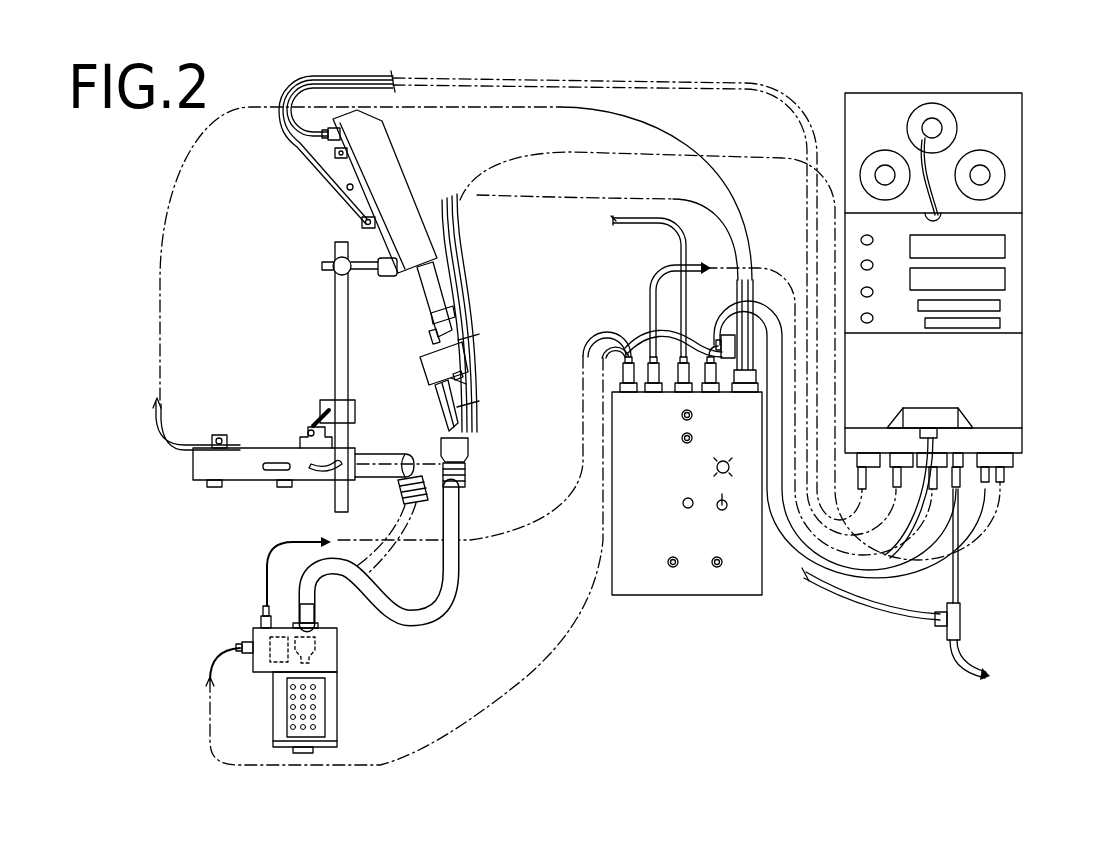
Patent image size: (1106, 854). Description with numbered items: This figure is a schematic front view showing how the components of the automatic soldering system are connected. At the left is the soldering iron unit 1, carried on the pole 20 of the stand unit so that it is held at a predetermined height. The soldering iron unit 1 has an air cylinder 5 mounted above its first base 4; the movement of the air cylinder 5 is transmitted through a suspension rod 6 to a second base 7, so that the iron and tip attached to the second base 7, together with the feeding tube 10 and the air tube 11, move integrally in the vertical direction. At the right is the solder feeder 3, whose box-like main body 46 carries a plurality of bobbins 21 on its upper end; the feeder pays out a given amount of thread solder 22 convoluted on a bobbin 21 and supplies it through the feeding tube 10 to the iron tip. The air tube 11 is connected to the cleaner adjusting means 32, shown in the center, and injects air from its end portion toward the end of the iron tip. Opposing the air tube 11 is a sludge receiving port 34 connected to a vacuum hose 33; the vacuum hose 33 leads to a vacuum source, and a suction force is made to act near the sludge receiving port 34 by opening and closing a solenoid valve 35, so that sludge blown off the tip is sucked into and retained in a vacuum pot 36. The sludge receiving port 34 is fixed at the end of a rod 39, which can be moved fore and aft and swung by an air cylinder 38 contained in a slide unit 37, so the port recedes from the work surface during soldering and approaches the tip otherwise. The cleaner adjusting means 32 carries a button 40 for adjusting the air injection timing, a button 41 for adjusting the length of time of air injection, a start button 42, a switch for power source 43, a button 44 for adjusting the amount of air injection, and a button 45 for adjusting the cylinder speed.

The soldering iron unit 1 is at (300, 256).
The solder feeder 3 is at (1042, 130).
The first base 4 is at (386, 276).
The air cylinder 5 is at (353, 186).
The suspension rod 6 is at (430, 304).
The second base 7 is at (422, 366).
The feeding tube 10 is at (452, 262).
The air tube 11 is at (468, 374).
The pole 20 is at (336, 326).
The bobbin 21 is at (885, 155).
The thread solder 22 is at (938, 206).
The cleaner adjusting means 32 is at (750, 600).
The vacuum hose 33 is at (433, 604).
The sludge receiving port 34 is at (485, 461).
The solenoid valve 35 is at (270, 640).
The vacuum pot 36 is at (326, 710).
The slide unit 37 is at (256, 440).
The air cylinder 38 is at (237, 487).
The rod 39 is at (440, 460).
The button for adjusting the air injection timing 40 is at (673, 568).
The button for adjusting the length of time of air injection 41 is at (717, 568).
The start button 42 is at (682, 504).
The switch for power source 43 is at (723, 511).
The button for adjusting the amount of air injection 44 is at (680, 441).
The button for adjusting the cylinder speed 45 is at (680, 416).
The main body 46 is at (1023, 372).